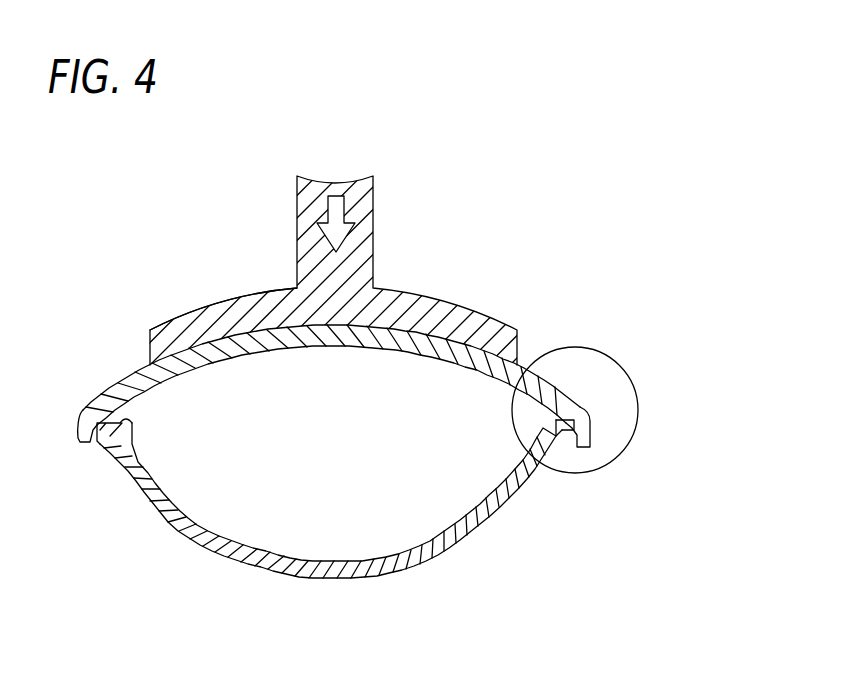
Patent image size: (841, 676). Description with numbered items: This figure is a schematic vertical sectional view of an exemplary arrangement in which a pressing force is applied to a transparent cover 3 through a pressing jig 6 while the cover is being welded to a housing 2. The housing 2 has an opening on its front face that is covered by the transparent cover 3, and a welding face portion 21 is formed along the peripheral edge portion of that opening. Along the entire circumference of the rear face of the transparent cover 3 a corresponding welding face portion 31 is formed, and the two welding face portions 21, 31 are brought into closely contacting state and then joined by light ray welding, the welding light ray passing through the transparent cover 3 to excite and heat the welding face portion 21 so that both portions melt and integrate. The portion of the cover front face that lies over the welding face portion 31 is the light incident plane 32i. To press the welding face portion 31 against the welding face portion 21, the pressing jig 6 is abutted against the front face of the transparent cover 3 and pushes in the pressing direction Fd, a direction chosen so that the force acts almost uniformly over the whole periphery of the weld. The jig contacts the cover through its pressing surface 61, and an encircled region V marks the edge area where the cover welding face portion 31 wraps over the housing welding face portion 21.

The housing 2 is at (430, 565).
The transparent cover 3 is at (443, 350).
The pressing jig 6 is at (373, 226).
The welding face portion 21 is at (133, 405).
The welding face portion 31 is at (580, 471).
The light incident plane 32i is at (559, 392).
The pressing surface 61 is at (188, 314).
The enlarged detail region V is at (621, 357).
The pressing direction Fd is at (336, 199).